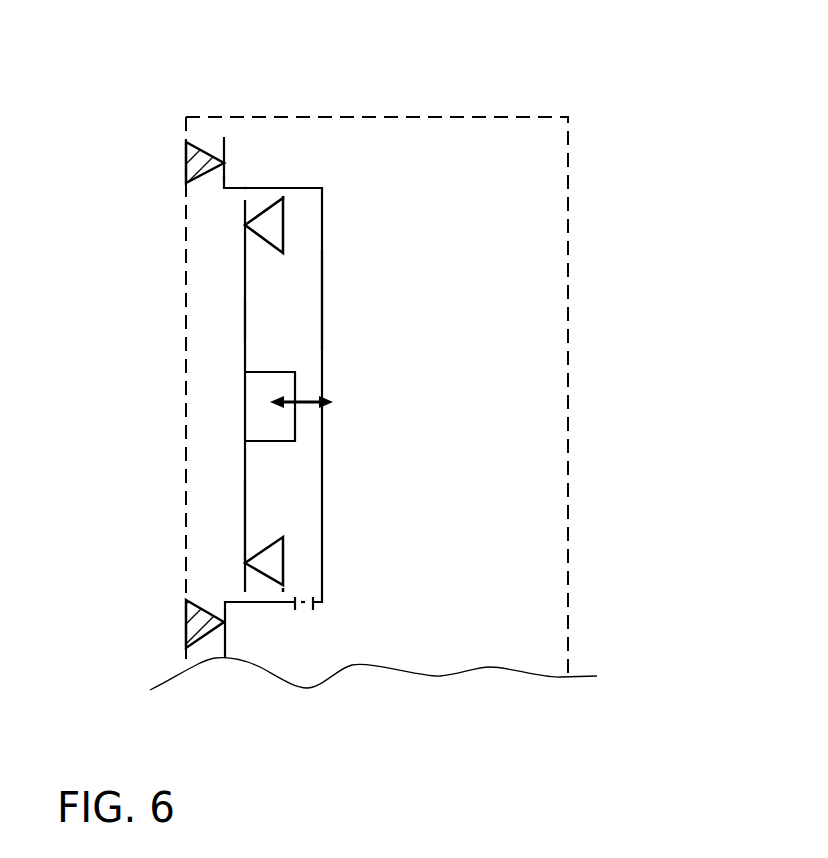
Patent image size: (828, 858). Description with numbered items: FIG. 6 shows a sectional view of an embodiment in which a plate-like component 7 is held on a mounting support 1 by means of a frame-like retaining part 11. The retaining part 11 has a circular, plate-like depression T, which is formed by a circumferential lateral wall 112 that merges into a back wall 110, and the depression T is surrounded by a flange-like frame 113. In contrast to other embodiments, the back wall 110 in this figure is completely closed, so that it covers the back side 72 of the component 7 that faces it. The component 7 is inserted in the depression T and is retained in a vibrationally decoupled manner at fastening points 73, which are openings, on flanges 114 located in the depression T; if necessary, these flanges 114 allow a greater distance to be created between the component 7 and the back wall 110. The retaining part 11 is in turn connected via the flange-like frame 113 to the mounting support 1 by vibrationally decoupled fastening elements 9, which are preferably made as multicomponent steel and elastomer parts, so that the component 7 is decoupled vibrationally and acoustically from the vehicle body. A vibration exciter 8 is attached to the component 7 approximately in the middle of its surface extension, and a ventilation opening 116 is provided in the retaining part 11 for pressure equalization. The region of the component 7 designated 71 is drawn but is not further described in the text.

The mounting support 1 is at (181, 104).
The plate-like component 7 is at (245, 350).
The vibration exciter 8 is at (257, 425).
The fastening elements 9 is at (198, 160).
The frame-like retaining part 11 is at (310, 164).
The rail section 71 is at (228, 530).
The back side 72 is at (262, 322).
The fastening points 73 is at (275, 225).
The back wall 110 is at (338, 300).
The lateral wall 112 is at (245, 186).
The flange-like frame 113 is at (223, 178).
The flanges 114 is at (283, 197).
The ventilation opening 116 is at (303, 607).
The depression T is at (255, 271).